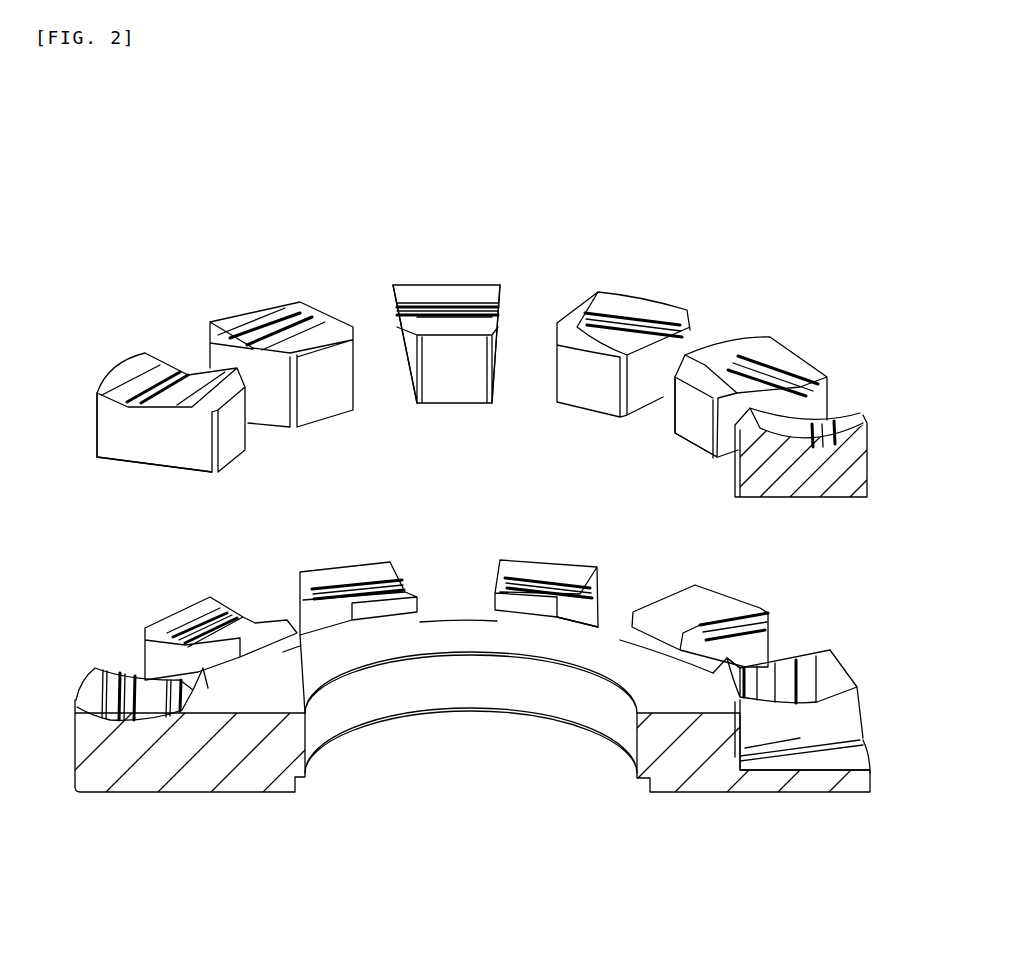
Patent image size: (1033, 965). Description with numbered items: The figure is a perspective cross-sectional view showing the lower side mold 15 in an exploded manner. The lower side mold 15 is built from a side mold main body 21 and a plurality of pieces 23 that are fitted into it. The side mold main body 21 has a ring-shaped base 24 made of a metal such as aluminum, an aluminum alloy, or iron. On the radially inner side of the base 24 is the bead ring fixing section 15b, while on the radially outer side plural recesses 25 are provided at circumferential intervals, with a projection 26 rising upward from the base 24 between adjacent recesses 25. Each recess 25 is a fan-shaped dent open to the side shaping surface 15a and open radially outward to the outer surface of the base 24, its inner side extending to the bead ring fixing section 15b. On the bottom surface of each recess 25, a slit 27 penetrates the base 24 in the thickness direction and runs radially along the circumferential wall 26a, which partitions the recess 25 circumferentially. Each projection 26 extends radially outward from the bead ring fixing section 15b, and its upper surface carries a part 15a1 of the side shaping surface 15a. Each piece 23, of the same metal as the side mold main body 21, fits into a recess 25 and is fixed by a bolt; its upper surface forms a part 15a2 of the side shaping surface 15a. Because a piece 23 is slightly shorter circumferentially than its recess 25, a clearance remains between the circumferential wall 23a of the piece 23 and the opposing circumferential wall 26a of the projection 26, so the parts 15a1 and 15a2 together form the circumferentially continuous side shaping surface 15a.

The lower side mold 15 is at (493, 98).
The side shaping surface 15a is at (494, 448).
The part of the side shaping surface 15a1 is at (885, 632).
The part of the side shaping surface 15a2 is at (832, 433).
The bead ring fixing section 15b is at (642, 655).
The side mold main body 21 is at (187, 803).
The piece 23 is at (330, 402).
The circumferential wall 23a is at (163, 437).
The base 24 is at (315, 725).
The recess 25 is at (822, 762).
The projection 26 is at (85, 697).
The circumferential wall 26a is at (588, 610).
The slit 27 is at (858, 720).